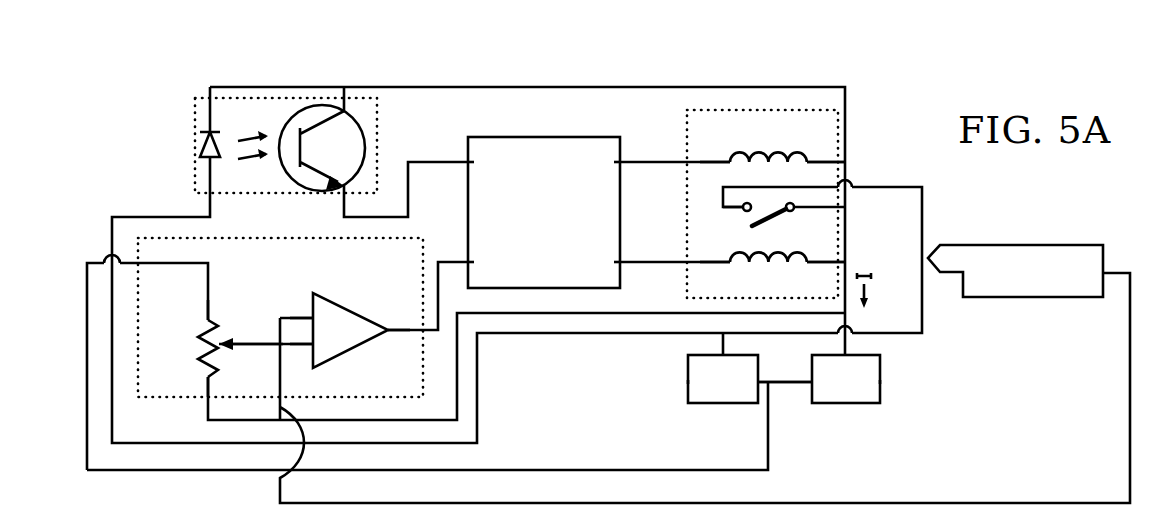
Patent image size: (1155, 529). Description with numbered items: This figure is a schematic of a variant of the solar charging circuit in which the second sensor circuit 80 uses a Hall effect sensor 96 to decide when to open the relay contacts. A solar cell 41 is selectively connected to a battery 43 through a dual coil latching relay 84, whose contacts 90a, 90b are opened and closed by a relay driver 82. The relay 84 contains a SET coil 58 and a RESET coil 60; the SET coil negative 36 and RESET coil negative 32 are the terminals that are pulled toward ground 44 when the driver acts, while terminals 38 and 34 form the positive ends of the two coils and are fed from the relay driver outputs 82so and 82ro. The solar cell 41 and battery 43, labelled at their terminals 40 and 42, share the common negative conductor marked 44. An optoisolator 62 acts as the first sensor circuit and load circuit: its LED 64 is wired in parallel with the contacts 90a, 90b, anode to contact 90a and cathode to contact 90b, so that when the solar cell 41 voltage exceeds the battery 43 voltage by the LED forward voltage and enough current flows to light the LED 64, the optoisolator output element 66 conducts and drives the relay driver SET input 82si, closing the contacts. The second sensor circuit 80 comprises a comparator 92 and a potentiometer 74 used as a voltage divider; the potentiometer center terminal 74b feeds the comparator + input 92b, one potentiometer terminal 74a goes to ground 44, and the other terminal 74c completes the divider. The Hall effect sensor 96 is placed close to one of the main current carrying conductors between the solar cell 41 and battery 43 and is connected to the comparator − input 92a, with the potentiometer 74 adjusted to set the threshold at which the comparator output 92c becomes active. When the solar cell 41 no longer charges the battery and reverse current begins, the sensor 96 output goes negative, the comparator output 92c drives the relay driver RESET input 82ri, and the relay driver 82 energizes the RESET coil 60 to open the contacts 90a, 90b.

The RESET coil negative 32 is at (700, 264).
The reset coil positive terminal 34 is at (838, 264).
The SET coil negative 36 is at (700, 160).
The set coil positive terminal 38 is at (843, 160).
The solar cell 40 is at (723, 355).
The solar cell 41 is at (686, 380).
The battery 42 is at (845, 355).
The battery 43 is at (884, 380).
The ground 44 is at (786, 385).
The SET coil 58 is at (797, 152).
The RESET coil 60 is at (790, 264).
The optoisolator 62 is at (286, 114).
The LED 64 is at (212, 158).
The optoisolator output element 66 is at (322, 148).
The potentiometer 74 is at (216, 341).
The potentiometer terminal 74a is at (212, 318).
The potentiometer center terminal 74b is at (233, 352).
The potentiometer terminal 74c is at (206, 396).
The second sensor circuit 80 is at (275, 338).
The relay driver 82 is at (544, 190).
The relay driver SET input 82si is at (490, 162).
The set output of latching relay driver 82so is at (620, 160).
The reset input of latching relay driver 82ri is at (496, 258).
The reset output of latching relay driver 82ro is at (620, 258).
The relay 84 is at (749, 204).
The relay contact 90a is at (743, 209).
The relay contact 90b is at (790, 212).
The comparator 92 is at (349, 332).
The comparator − input 92a is at (310, 316).
The comparator + input 92b is at (310, 346).
The comparator output 92c is at (386, 329).
The Hall effect sensor 96 is at (985, 298).